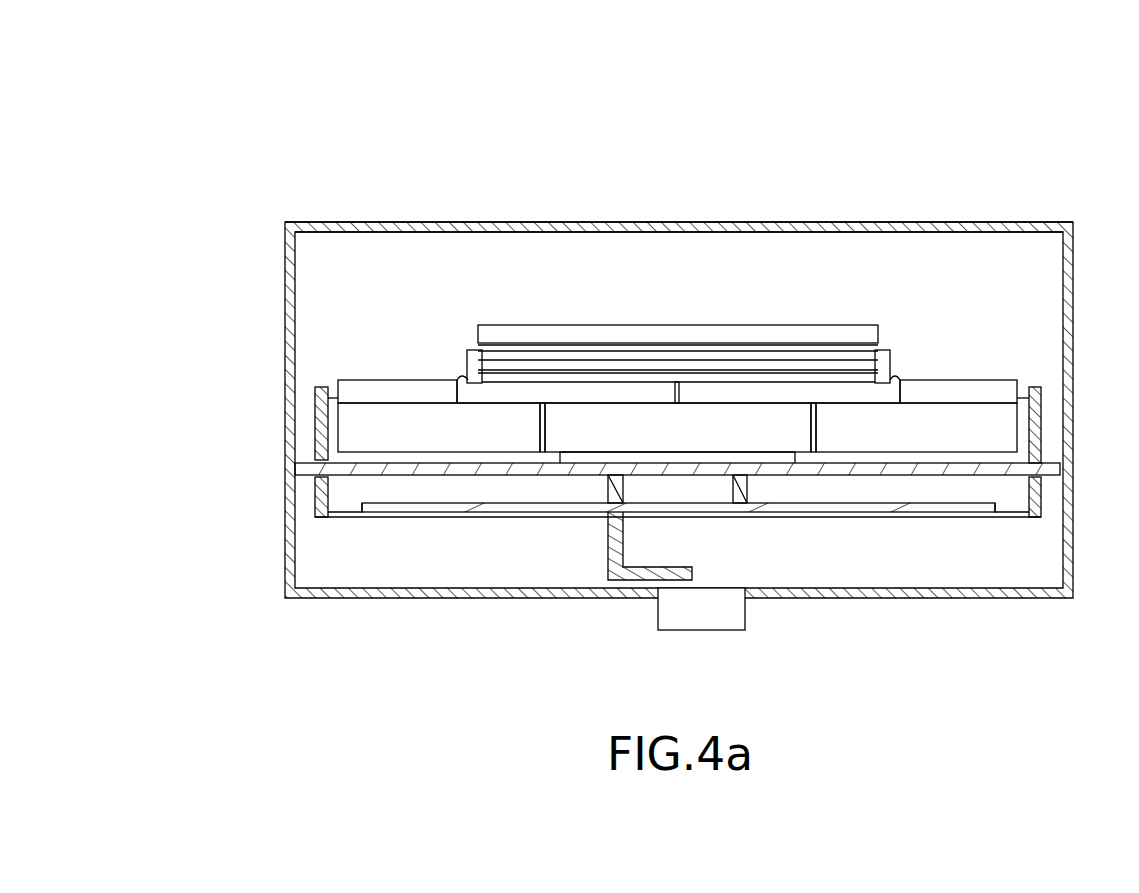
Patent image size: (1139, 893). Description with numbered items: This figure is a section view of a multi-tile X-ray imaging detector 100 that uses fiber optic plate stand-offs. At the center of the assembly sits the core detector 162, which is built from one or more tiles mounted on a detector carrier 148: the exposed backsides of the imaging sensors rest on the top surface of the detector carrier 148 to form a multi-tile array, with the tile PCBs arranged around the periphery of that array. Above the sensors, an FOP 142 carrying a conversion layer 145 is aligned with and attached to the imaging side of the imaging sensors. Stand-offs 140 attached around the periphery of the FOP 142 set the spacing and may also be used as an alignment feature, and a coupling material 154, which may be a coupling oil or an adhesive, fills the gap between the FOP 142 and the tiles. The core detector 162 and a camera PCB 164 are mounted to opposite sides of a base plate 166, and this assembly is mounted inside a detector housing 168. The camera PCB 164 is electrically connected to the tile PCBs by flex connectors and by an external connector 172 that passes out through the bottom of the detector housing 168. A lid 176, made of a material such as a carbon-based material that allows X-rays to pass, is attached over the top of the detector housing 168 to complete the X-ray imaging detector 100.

The X-ray imaging detector 100 is at (314, 119).
The stand-offs 140 is at (467, 355).
The FOP 142 is at (781, 358).
The conversion layer 145 is at (683, 326).
The detector carrier 148 is at (557, 430).
The coupling material 154 is at (658, 385).
The core detector 162 is at (678, 323).
The camera PCB 164 is at (703, 517).
The base plate 166 is at (1018, 462).
The detector housing 168 is at (283, 530).
The external connector 172 is at (731, 631).
The lid 176 is at (488, 222).